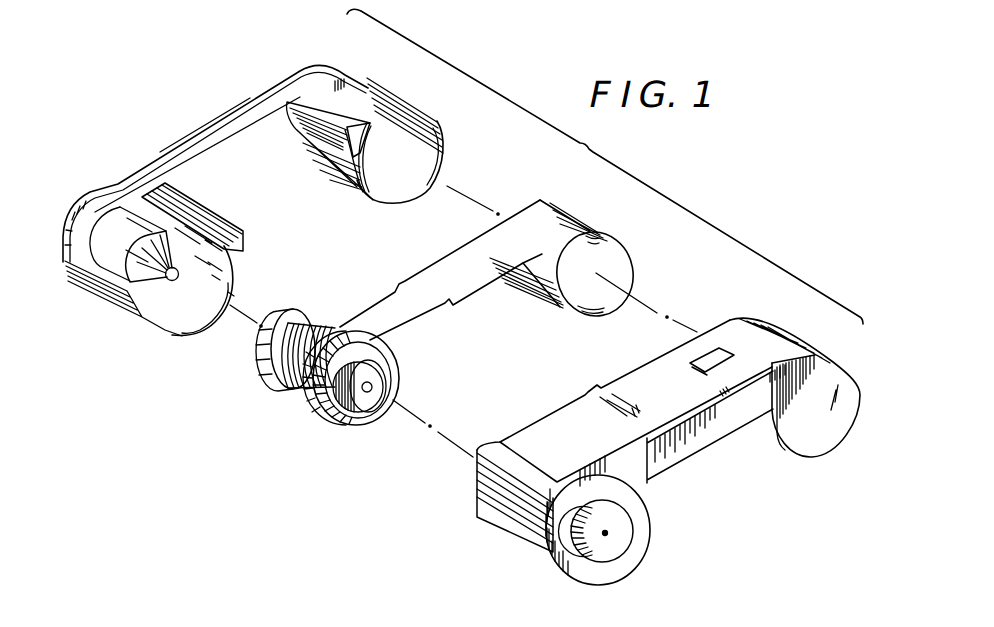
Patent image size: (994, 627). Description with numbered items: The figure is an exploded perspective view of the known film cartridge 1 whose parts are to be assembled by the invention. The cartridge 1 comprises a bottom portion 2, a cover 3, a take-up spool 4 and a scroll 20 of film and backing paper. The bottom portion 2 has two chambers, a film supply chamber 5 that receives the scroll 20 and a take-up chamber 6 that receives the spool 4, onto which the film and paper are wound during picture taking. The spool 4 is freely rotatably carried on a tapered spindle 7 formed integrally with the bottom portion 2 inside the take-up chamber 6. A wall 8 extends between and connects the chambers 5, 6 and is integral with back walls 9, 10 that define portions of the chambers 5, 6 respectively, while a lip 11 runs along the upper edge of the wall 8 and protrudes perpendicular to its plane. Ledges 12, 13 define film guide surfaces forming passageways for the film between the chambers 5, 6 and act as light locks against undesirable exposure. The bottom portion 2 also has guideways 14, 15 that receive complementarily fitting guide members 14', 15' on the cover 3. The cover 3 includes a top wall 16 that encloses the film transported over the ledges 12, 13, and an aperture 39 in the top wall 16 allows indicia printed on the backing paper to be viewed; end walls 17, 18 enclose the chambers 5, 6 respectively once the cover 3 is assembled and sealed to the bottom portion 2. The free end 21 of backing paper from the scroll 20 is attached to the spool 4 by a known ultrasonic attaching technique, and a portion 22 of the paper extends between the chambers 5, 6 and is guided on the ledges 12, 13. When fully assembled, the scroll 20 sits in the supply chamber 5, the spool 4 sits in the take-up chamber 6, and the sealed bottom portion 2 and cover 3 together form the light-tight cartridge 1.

The cartridge 1 is at (183, 377).
The bottom portion 2 is at (261, 79).
The cover 3 is at (703, 490).
The take-up spool 4 is at (283, 420).
The film supply chamber 5 is at (417, 183).
The take-up chamber 6 is at (183, 323).
The tapered spindle 7 is at (153, 227).
The wall 8 is at (210, 152).
The back wall 9 is at (350, 83).
The back wall 10 is at (85, 233).
The lip 11 is at (173, 147).
The ledge 12 is at (316, 105).
The ledge 13 is at (210, 220).
The guideway 14 is at (405, 107).
The guide member 14' is at (828, 368).
The guideway 15 is at (114, 298).
The guide member 15' is at (505, 507).
The top wall 16 is at (627, 387).
The end wall 17 is at (816, 448).
The end wall 18 is at (627, 548).
The scroll of film and backing paper 20 is at (567, 320).
The free end of backing paper 21 is at (340, 327).
The portion of the paper 22 is at (413, 283).
The aperture 39 is at (718, 350).